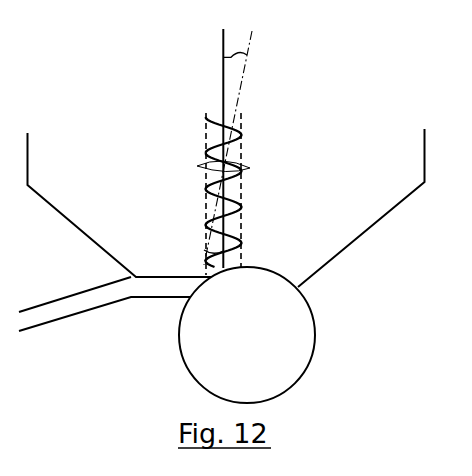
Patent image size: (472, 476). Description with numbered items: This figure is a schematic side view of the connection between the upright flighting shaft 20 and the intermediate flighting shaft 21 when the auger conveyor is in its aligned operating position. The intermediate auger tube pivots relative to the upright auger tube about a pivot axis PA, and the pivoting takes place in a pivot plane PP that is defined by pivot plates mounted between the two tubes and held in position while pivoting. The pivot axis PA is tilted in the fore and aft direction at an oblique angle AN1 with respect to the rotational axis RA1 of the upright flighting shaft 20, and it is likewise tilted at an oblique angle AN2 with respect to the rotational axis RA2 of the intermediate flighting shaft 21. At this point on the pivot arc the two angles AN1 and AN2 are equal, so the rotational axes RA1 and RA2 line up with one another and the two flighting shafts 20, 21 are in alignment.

The upright flighting shaft 20 is at (225, 184).
The intermediate flighting shaft 21 is at (217, 141).
The pivot plane PP is at (197, 165).
The pivot axis PA is at (240, 140).
The rotational axis of the upright flighting shaft RA1 is at (242, 207).
The rotational axis of the intermediate flighting shaft RA2 is at (223, 91).
The oblique angle AN1 is at (209, 252).
The oblique angle AN2 is at (247, 55).